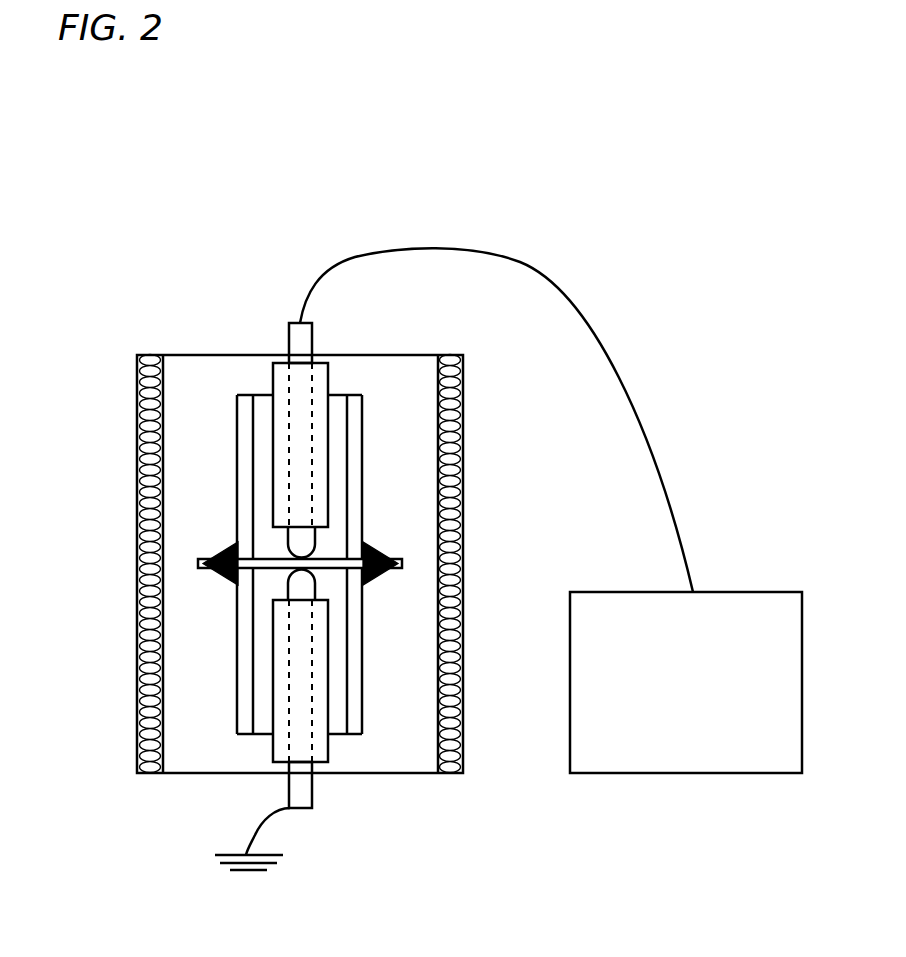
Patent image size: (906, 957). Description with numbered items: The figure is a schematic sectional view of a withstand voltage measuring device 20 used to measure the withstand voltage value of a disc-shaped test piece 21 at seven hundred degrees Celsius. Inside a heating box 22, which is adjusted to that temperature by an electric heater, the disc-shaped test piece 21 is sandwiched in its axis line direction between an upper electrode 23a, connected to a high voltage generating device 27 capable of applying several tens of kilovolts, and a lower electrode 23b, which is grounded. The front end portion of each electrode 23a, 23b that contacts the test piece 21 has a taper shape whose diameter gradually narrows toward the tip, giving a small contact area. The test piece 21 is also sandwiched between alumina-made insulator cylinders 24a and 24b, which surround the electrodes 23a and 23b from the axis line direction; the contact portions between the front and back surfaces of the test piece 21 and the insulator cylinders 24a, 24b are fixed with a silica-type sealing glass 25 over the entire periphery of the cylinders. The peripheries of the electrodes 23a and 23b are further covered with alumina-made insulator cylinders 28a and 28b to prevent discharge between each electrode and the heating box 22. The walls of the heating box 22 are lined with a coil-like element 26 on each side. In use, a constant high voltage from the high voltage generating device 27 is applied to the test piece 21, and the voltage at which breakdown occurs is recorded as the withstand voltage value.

The withstand voltage measuring device 20 is at (178, 272).
The disc-shaped test piece 21 is at (402, 563).
The heating box 22 is at (440, 783).
The electrode 23a is at (290, 335).
The electrode 23b is at (297, 792).
The alumina-made insulator cylinder 24a is at (243, 418).
The alumina-made insulator cylinder 24b is at (245, 730).
The sealing glass 25 is at (220, 552).
The coil 26 is at (133, 432).
The high voltage generating device 27 is at (648, 750).
The alumina-made insulator cylinder 28a is at (322, 370).
The alumina-made insulator cylinder 28b is at (325, 760).